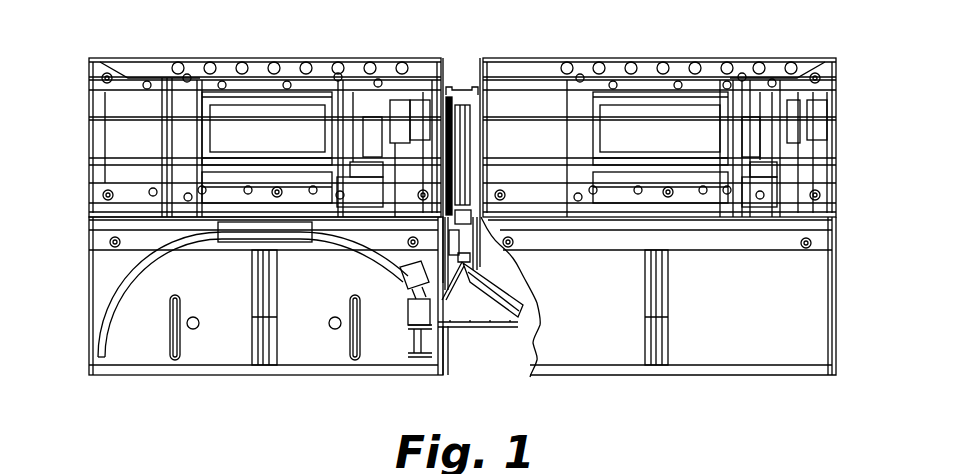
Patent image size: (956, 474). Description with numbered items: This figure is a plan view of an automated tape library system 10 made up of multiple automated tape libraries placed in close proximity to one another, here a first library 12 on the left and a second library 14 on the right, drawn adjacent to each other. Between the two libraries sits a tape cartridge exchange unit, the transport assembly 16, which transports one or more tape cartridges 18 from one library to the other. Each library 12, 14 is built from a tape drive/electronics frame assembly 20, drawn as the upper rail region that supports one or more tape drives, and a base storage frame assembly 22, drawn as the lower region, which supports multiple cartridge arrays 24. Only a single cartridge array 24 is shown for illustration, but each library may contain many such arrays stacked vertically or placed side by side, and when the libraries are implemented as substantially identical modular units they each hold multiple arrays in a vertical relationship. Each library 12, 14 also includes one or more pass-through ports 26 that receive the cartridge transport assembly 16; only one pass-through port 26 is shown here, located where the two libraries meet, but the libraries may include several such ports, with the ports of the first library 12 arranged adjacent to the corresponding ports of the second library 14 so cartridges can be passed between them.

The automated tape library system 10 is at (286, 28).
The first library 12 is at (88, 138).
The second library 14 is at (836, 138).
The tape cartridge transport assembly 16 is at (461, 74).
The tape cartridge 18 is at (410, 320).
The tape drive/electronics frame assembly 20 is at (160, 57).
The base storage frame assembly 22 is at (148, 352).
The cartridge array 24 is at (402, 292).
The pass-through port 26 is at (453, 328).